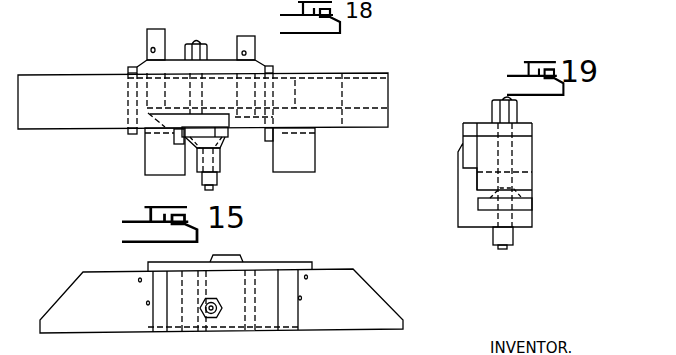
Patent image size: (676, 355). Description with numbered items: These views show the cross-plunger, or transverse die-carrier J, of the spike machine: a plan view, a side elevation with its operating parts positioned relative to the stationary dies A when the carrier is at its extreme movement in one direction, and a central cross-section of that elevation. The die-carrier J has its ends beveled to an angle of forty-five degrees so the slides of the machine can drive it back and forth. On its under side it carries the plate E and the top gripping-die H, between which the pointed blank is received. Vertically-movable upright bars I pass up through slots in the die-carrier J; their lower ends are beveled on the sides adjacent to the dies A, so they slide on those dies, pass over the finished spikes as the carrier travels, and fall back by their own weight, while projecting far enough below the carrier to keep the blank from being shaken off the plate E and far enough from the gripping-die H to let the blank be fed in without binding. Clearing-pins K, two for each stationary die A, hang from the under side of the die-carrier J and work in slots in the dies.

In FIG. 18, the transverse die-carrier J is at (203, 101).
In FIG. 19, the transverse die-carrier J is at (466, 198).
In FIG. 15, the transverse die-carrier J is at (221, 294).
In FIG. 18, the upright bars I is at (146, 48).
In FIG. 18, the clearing-pins K is at (129, 67).
In FIG. 18, the stationary dies A is at (158, 150).
In FIG. 18, the plate E is at (227, 143).
In FIG. 19, the plate E is at (523, 203).
In FIG. 18, the top gripping-die H is at (190, 143).
In FIG. 19, the top gripping-die H is at (527, 193).